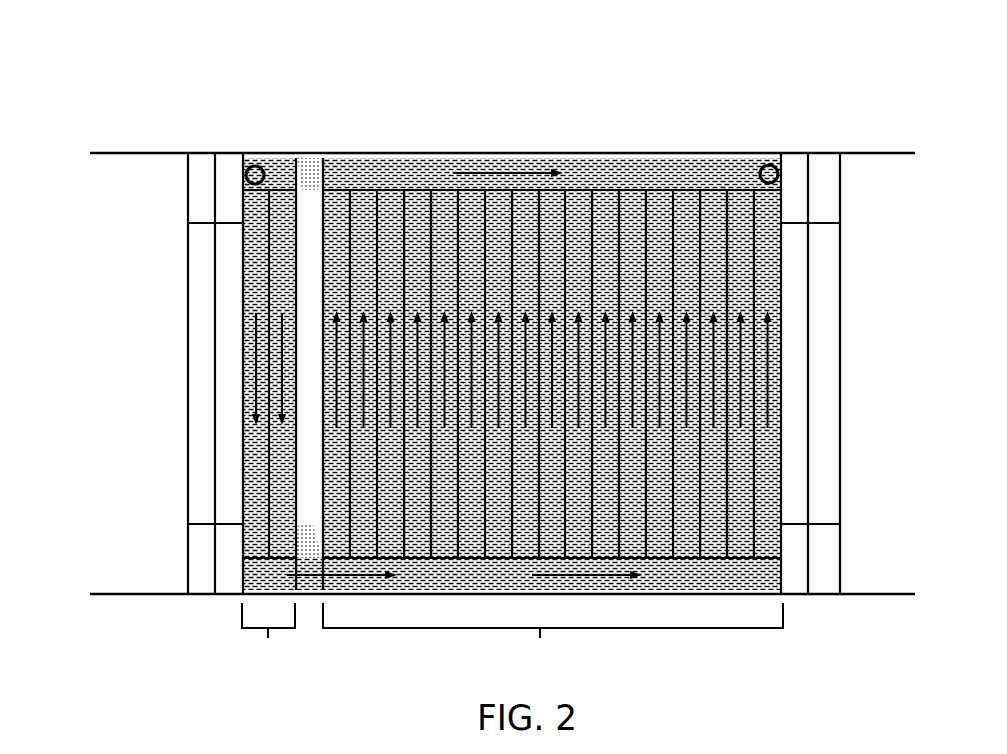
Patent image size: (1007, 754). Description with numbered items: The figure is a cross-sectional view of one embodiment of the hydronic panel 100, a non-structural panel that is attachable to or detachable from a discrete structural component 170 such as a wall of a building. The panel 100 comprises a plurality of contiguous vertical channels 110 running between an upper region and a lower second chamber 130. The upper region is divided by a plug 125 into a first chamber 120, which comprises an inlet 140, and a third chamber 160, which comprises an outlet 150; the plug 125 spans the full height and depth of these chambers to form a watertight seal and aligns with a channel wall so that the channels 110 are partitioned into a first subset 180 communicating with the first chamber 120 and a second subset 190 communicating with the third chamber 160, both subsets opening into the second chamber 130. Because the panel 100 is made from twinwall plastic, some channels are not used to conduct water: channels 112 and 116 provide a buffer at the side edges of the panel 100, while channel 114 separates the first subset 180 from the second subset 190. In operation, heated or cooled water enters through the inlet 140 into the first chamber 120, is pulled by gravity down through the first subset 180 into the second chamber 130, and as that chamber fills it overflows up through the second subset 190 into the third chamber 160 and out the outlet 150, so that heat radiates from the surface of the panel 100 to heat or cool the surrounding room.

The hydronic panel 100 is at (168, 58).
The contiguous channels 110 is at (253, 498).
The channel 112 is at (202, 345).
The channel 114 is at (325, 205).
The channel 116 is at (808, 358).
The first chamber 120 is at (280, 162).
The plug 125 is at (313, 178).
The second chamber 130 is at (760, 566).
The inlet 140 is at (245, 163).
The outlet 150 is at (762, 163).
The third chamber 160 is at (478, 167).
The discrete structural component 170 is at (897, 192).
The first subset of channels 180 is at (270, 640).
The second subset of channels 190 is at (553, 640).